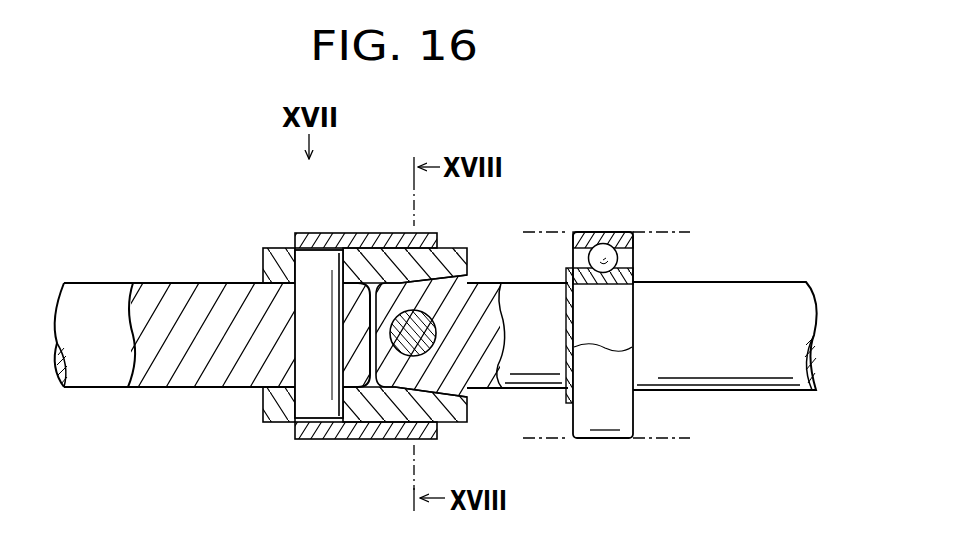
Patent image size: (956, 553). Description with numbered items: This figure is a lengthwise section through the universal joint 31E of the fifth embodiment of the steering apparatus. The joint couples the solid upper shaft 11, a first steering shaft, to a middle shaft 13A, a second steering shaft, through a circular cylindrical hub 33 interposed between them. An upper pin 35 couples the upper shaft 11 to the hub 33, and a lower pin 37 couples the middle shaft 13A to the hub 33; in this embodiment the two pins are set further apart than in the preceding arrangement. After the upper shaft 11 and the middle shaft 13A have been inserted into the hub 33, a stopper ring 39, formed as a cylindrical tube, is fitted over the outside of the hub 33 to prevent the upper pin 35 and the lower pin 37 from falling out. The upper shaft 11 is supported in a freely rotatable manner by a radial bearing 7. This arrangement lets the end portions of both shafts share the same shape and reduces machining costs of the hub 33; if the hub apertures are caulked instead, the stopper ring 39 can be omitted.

The shaft 13A is at (101, 290).
The stopper ring 39 is at (351, 232).
The lower pin 37 is at (312, 403).
The coupling block 33 is at (455, 262).
The shaft end portion 31E is at (461, 214).
The upper pin 35 is at (437, 348).
The upper shaft 11 is at (756, 287).
The radial bearing 7 is at (605, 420).